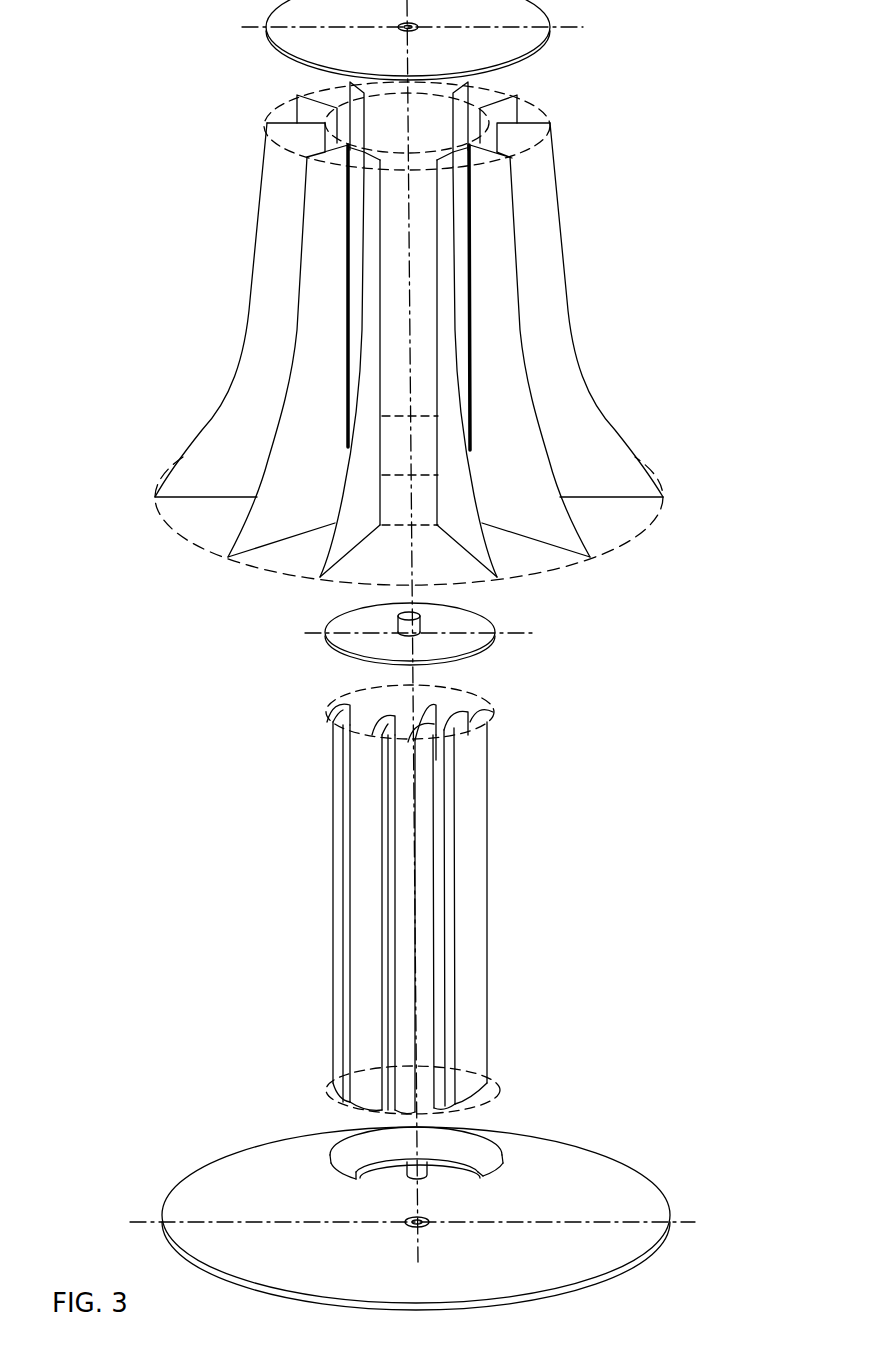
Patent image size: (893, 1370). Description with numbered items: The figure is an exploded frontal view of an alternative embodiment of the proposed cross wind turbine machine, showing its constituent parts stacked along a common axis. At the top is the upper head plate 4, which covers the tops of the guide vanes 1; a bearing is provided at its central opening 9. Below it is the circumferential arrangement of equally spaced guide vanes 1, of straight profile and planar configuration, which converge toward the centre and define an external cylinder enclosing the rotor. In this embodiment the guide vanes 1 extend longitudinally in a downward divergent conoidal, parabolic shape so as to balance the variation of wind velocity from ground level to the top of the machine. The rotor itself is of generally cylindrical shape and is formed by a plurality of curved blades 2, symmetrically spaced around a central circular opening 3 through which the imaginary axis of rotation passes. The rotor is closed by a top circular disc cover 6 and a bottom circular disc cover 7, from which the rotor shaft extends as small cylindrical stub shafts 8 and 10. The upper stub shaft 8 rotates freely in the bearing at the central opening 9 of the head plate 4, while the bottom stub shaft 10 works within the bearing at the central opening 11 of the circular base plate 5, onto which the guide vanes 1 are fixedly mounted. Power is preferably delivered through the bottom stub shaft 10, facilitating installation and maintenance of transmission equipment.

The guide vanes 1 is at (268, 328).
The blades 2 is at (475, 918).
The central circular opening 3 is at (579, 713).
The upper head plate 4 is at (350, 48).
The circular base plate 5 is at (533, 1259).
The top circular disc cover 6 is at (362, 650).
The bottom circular disc cover 7 is at (350, 1153).
The stub shaft 8 is at (430, 625).
The central opening 9 is at (568, 45).
The stub shaft 10 is at (586, 1183).
The central opening 11 is at (249, 1204).